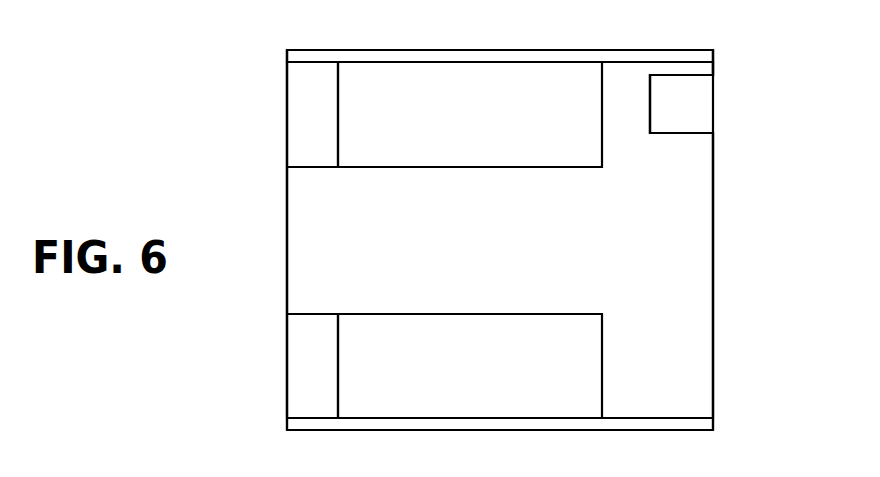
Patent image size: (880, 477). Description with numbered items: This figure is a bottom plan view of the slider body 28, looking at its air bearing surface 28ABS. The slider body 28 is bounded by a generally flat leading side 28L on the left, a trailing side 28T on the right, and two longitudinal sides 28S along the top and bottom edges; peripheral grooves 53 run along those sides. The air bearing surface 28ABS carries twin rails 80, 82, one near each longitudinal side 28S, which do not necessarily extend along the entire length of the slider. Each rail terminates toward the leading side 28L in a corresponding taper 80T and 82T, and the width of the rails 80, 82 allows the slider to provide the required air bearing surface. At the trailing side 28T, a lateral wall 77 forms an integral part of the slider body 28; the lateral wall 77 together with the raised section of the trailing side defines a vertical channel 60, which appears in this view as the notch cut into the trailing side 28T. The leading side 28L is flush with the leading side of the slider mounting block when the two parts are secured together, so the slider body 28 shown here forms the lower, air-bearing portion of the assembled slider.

The slider body 28 is at (286, 200).
The air bearing surface 28ABS is at (538, 252).
The leading side 28L is at (286, 288).
The longitudinal sides 28S is at (441, 50).
The trailing side 28T is at (662, 32).
The peripheral grooves 53 is at (372, 58).
The vertical channel 60 is at (683, 79).
The lateral wall 77 is at (713, 72).
The rail 80 is at (490, 129).
The taper 80T is at (303, 115).
The rail 82 is at (490, 383).
The taper 82T is at (301, 368).